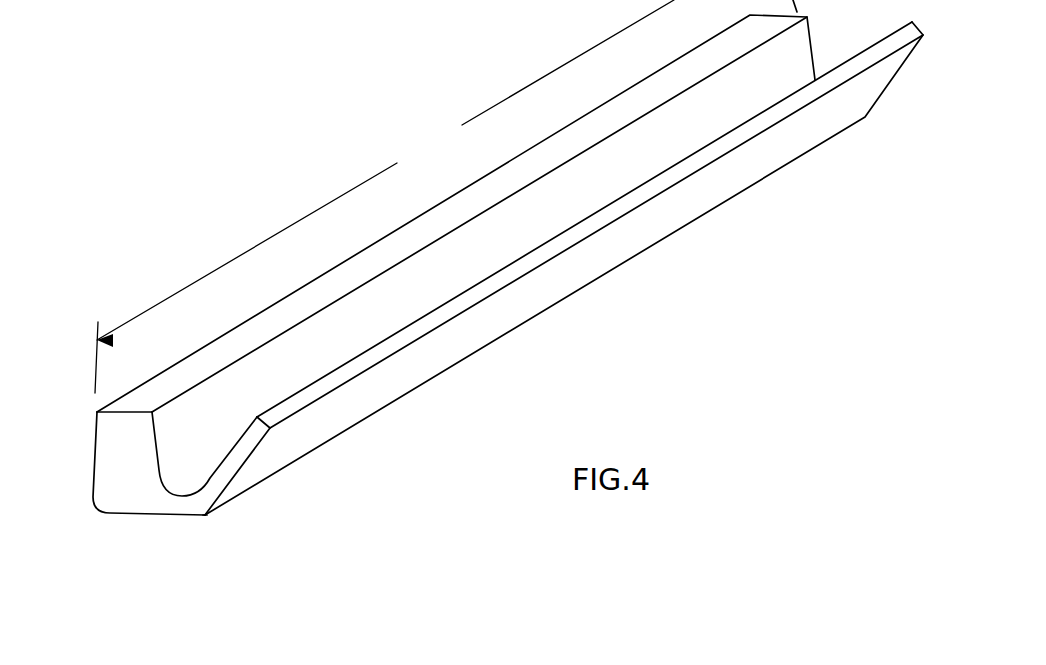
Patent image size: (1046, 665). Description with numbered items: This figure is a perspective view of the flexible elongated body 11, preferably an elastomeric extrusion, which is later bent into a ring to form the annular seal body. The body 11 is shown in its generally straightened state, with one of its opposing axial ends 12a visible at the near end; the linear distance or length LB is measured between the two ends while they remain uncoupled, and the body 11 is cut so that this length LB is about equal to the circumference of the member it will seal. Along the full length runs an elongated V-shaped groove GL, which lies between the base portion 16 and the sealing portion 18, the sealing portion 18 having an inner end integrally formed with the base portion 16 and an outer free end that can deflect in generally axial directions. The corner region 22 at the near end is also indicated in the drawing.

The flexible elongated body 11 is at (722, 228).
The end 12a is at (134, 500).
The base portion 16 is at (352, 270).
The sealing portion 18 is at (612, 258).
The bottom corner edge 22 is at (193, 519).
The linear distance or length LB is at (384, 196).
The elongated V-shaped groove GL is at (587, 182).